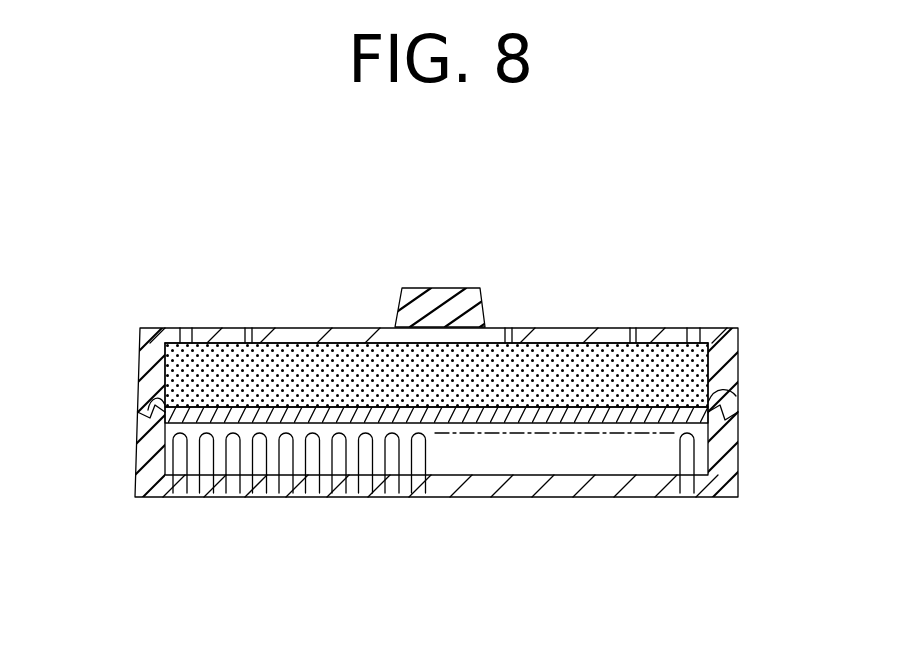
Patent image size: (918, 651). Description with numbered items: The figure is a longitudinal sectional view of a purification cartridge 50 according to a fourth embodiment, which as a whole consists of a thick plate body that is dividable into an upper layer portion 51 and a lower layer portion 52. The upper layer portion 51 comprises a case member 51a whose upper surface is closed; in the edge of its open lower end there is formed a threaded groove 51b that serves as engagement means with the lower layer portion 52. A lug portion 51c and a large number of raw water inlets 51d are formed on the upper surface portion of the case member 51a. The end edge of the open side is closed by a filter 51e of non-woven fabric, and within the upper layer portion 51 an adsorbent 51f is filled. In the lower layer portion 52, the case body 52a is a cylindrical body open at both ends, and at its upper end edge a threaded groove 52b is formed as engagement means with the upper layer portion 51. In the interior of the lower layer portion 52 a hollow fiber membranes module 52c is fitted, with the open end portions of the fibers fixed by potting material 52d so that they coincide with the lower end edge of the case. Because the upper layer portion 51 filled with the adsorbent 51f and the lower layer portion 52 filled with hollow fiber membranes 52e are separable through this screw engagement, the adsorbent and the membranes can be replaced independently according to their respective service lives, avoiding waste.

The purification cartridge 50 is at (522, 252).
The upper layer portion 51 is at (743, 343).
The case member 51a is at (643, 328).
The threaded groove 51b is at (735, 397).
The lug portion 51c is at (438, 288).
The raw water inlets 51d is at (247, 343).
The filter 51e is at (558, 407).
The adsorbent 51f is at (200, 370).
The lower layer portion 52 is at (743, 470).
The case body 52a is at (143, 470).
The threaded groove 52b is at (737, 420).
The hollow fiber membranes module 52c is at (478, 578).
The potting material 52d is at (407, 445).
The hollow fiber membranes 52e is at (443, 445).